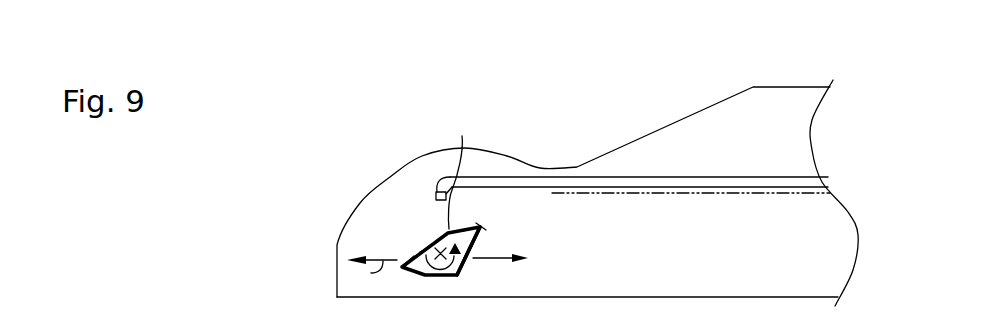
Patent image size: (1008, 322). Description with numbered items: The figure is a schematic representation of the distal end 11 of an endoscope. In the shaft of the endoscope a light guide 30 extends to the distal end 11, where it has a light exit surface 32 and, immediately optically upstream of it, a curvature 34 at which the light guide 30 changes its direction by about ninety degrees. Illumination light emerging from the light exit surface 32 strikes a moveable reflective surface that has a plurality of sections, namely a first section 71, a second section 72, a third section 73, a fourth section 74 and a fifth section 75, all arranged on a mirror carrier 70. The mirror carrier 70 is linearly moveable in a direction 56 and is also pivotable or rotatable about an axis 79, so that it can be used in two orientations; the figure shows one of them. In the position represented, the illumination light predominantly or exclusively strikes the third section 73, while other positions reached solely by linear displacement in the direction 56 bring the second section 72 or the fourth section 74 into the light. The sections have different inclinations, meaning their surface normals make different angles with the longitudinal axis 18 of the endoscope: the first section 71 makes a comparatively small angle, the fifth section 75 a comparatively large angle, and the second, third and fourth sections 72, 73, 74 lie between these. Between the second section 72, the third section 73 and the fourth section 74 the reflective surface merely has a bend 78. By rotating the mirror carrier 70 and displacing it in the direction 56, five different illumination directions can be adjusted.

The distal end 11 is at (293, 122).
The longitudinal axis 18 is at (628, 192).
The light guide 30 is at (688, 178).
The light exit surface 32 is at (459, 168).
The curvature 34 is at (441, 192).
The direction 56 is at (416, 278).
The mirror carrier 70 is at (468, 226).
The first section 71 is at (482, 251).
The second section 72 is at (410, 259).
The third section 73 is at (432, 244).
The fourth section 74 is at (482, 226).
The fifth section 75 is at (401, 270).
The bend 78 is at (424, 250).
The axis 79 is at (438, 247).